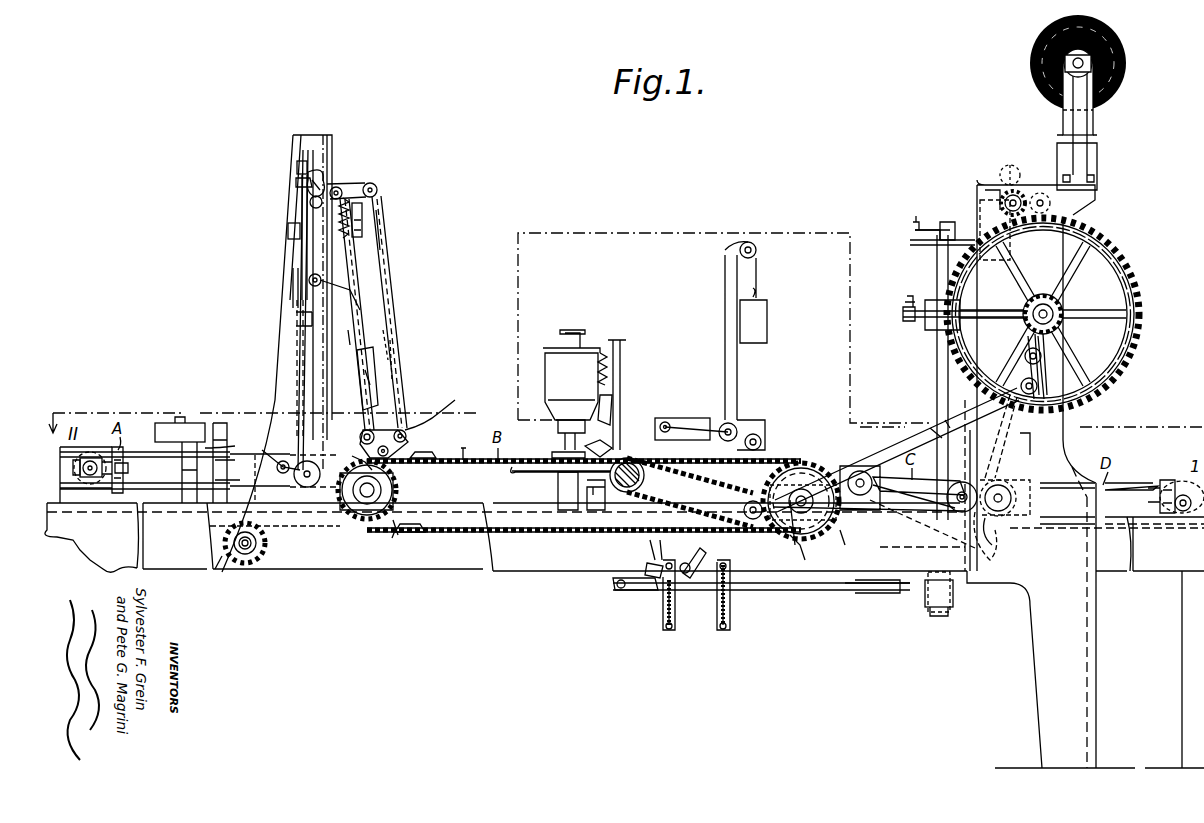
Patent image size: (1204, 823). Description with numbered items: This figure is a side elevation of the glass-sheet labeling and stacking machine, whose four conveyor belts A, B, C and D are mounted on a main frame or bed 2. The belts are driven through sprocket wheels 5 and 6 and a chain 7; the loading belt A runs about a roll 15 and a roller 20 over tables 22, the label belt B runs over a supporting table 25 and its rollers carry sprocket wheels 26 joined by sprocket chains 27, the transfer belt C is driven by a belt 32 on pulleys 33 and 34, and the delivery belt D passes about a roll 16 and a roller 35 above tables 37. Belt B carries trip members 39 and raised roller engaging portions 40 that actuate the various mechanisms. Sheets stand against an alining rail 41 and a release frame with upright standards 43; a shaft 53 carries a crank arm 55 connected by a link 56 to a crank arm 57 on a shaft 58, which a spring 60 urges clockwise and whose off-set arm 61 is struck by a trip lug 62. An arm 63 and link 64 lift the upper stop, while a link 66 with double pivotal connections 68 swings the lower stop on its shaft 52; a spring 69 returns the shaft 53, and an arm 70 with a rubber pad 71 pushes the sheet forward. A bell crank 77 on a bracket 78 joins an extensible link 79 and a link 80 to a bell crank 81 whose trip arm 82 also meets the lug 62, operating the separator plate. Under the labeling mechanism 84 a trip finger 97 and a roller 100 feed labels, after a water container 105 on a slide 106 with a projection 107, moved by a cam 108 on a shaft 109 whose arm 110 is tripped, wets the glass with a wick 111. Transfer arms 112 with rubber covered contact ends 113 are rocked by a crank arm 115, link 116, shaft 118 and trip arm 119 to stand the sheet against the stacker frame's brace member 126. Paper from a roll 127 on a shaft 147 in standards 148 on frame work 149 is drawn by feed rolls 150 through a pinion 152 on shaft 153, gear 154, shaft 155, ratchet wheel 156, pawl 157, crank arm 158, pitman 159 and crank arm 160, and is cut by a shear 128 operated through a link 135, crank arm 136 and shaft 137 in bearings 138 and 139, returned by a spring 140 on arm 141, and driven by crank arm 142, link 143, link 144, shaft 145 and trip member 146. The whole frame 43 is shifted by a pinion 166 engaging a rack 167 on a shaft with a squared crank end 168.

The main frame or bed 2 is at (445, 573).
The sprocket wheel 5 is at (645, 476).
The sprocket wheel 6 is at (760, 480).
The chain 7 is at (632, 490).
The roll of the loading belt 15 is at (306, 487).
The roll of the delivery belt 16 is at (1167, 480).
The roller 20 is at (100, 480).
The tables 22 is at (168, 458).
The supporting table 25 is at (550, 471).
The sprocket wheels 26 is at (372, 535).
The sprocket chains 27 is at (487, 463).
The belt 32 is at (850, 542).
The pulley 33 is at (970, 482).
The pulley 34 is at (810, 543).
The roller 35 is at (1012, 499).
The tables 37 is at (1140, 491).
The trip members 39 is at (468, 441).
The raised roller engaging portions 40 is at (428, 455).
The alining rail 41 is at (180, 423).
The upright standards 43 is at (300, 147).
The shaft 52 is at (276, 466).
The shaft 53 is at (325, 185).
The crank arm 55 is at (372, 188).
The link 56 is at (400, 353).
The crank arm 57 is at (402, 430).
The shaft 58 is at (360, 436).
The spring 60 is at (397, 478).
The off-set portion or arm 61 is at (431, 413).
The trip lug 62 is at (355, 458).
The arm 63 is at (296, 163).
The link 64 is at (298, 196).
The link 66 is at (296, 323).
The pivotal connections 68 is at (295, 182).
The spring 69 is at (364, 216).
The arm 70 is at (295, 250).
The rubber pad or face member 71 is at (298, 283).
The bell crank 77 is at (350, 222).
The bracket 78 is at (372, 302).
The extensible link 79 is at (364, 208).
The link 80 is at (362, 292).
The bell crank 81 is at (362, 430).
The off-set trip arm 82 is at (378, 449).
The labeling mechanism 84 is at (690, 418).
The trip finger 97 is at (762, 442).
The roller 100 is at (738, 430).
The water container 105 is at (540, 360).
The slide 106 is at (612, 398).
The projection 107 is at (562, 442).
The cam 108 is at (590, 440).
The shaft 109 is at (595, 440).
The arm 110 is at (622, 440).
The wick 111 is at (552, 453).
The transfer arms 112 is at (912, 538).
The rubber covered contact ends 113 is at (869, 488).
The crank arm 115 is at (993, 530).
The link 116 is at (876, 590).
The shaft 118 is at (684, 585).
The trip arm 119 is at (697, 555).
The brace member 126 is at (1070, 405).
The roll of paper 127 is at (1030, 58).
The shear 128 is at (860, 452).
The link 135 is at (910, 300).
The crank arm 136 is at (920, 325).
The shaft 137 is at (937, 384).
The bearing 138 is at (953, 598).
The bearing 139 is at (922, 245).
The spring 140 is at (912, 229).
The arm 141 is at (928, 225).
The crank arm 142 is at (930, 600).
The link 143 is at (815, 590).
The link 144 is at (648, 565).
The shaft 145 is at (622, 592).
The trip member 146 is at (650, 545).
The shaft 147 is at (1120, 63).
The standards 148 is at (1090, 126).
The frame work 149 is at (1080, 210).
The feed rolls 150 is at (1010, 172).
The pinion 152 is at (1000, 195).
The shaft 153 is at (1030, 203).
The gear 154 is at (1142, 315).
The shaft 155 is at (1061, 324).
The ratchet wheel 156 is at (1059, 304).
The pawl 157 is at (1046, 359).
The crank arm 158 is at (1041, 387).
The adjustable link or pitman 159 is at (1006, 428).
The crank arm 160 is at (790, 535).
The pinion 166 is at (218, 568).
The rack 167 is at (266, 541).
The squared crank end 168 is at (250, 551).